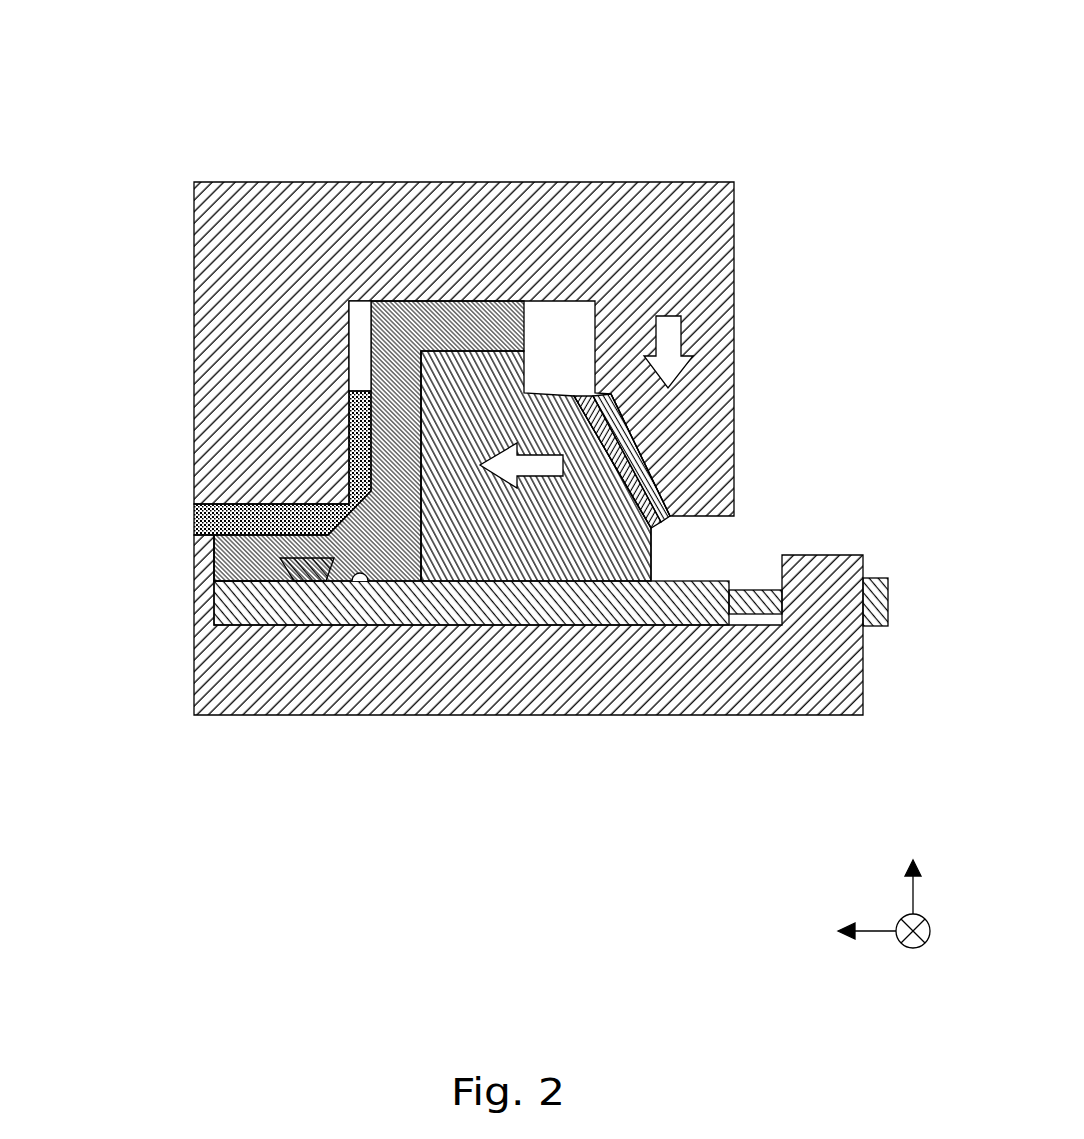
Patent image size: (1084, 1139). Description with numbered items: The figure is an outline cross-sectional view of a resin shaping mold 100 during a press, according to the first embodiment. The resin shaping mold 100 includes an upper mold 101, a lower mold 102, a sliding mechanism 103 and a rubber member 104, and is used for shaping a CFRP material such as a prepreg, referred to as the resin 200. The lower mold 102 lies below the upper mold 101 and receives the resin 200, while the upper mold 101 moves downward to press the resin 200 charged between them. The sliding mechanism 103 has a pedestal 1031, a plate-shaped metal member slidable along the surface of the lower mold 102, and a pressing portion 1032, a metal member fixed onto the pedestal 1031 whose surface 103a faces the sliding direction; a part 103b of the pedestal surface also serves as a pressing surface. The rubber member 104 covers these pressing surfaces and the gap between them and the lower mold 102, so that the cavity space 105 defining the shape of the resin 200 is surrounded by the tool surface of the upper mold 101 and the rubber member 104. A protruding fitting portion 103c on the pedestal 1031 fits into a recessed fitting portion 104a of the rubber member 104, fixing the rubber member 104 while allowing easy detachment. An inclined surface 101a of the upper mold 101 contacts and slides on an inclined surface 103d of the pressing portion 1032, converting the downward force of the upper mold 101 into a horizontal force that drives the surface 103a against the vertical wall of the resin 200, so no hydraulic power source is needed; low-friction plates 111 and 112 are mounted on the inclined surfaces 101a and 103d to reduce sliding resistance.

The resin shaping mold 100 is at (533, 31).
The upper mold 101 is at (613, 174).
The inclined surface 101a is at (613, 440).
The lower mold 102 is at (806, 662).
The sliding mechanism 103 is at (551, 627).
The pedestal 1031 is at (433, 600).
The pressing portion 1032 is at (512, 550).
The surface 103a is at (410, 478).
The part of a surface of the pedestal 103b is at (352, 568).
The fitting portion 103c is at (297, 566).
The inclined surface 103d is at (605, 598).
The rubber member 104 is at (375, 322).
The fitting portion 104a is at (262, 566).
The cavity space 105 is at (357, 360).
The plate 111 is at (633, 460).
The plate 112 is at (633, 488).
The resin 200 is at (345, 447).